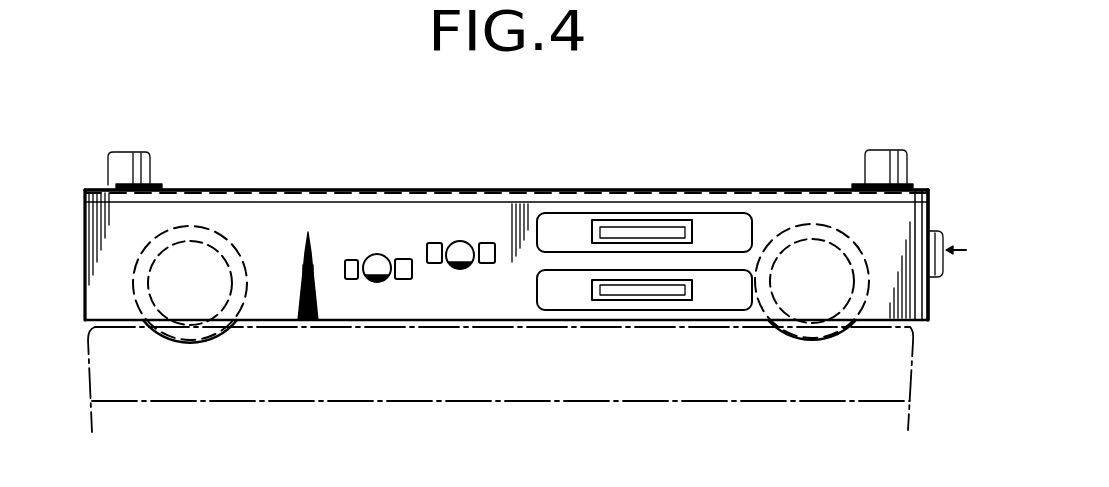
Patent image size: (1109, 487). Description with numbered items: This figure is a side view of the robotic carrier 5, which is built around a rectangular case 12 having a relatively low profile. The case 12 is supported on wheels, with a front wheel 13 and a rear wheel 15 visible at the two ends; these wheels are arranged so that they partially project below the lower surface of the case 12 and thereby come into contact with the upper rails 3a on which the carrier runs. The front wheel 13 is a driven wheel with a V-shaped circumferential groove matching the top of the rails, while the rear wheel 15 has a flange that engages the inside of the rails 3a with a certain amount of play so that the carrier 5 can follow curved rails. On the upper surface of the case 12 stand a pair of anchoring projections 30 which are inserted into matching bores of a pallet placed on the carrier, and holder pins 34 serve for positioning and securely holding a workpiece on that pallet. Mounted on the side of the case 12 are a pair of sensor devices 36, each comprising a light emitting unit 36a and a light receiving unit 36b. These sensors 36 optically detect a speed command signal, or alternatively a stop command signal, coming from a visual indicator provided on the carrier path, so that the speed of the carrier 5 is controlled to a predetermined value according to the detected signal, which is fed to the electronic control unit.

The upper rails 3a is at (755, 370).
The robotic carrier 5 is at (922, 185).
The rectangular case 12 is at (808, 190).
The front wheel 13 is at (832, 338).
The rear wheel 15 is at (190, 343).
The anchoring projection 30 is at (120, 168).
The holder pin 34 is at (652, 232).
The sensor device 36 is at (454, 250).
The light emitting unit 36a is at (350, 258).
The light receiving unit 36b is at (378, 254).